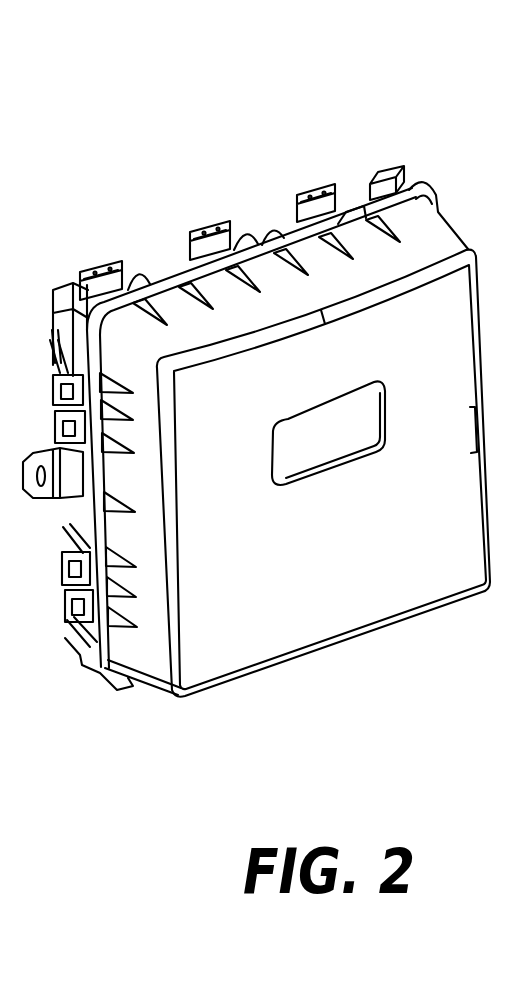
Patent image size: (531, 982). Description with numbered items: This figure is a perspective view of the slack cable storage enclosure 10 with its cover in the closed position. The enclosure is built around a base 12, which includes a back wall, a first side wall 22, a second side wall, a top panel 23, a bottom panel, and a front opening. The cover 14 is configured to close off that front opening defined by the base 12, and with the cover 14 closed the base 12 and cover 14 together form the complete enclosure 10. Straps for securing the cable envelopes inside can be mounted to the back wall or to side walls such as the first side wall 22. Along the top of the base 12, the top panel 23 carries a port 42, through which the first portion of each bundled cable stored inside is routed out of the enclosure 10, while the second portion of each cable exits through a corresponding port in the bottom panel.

The slack cable storage enclosure 10 is at (374, 99).
The base 12 is at (48, 328).
The cover 14 is at (410, 540).
The first side wall 22 is at (67, 533).
The top panel 23 is at (207, 228).
The port 42 is at (127, 258).